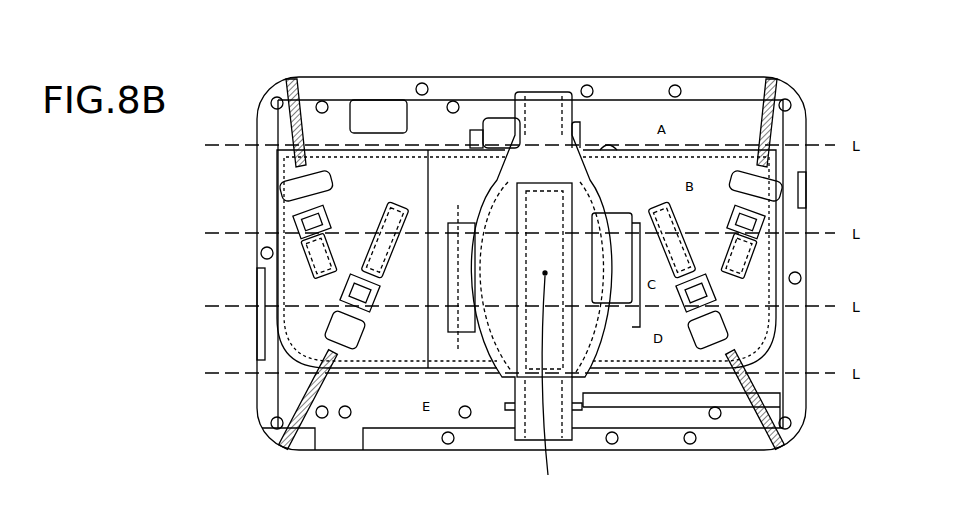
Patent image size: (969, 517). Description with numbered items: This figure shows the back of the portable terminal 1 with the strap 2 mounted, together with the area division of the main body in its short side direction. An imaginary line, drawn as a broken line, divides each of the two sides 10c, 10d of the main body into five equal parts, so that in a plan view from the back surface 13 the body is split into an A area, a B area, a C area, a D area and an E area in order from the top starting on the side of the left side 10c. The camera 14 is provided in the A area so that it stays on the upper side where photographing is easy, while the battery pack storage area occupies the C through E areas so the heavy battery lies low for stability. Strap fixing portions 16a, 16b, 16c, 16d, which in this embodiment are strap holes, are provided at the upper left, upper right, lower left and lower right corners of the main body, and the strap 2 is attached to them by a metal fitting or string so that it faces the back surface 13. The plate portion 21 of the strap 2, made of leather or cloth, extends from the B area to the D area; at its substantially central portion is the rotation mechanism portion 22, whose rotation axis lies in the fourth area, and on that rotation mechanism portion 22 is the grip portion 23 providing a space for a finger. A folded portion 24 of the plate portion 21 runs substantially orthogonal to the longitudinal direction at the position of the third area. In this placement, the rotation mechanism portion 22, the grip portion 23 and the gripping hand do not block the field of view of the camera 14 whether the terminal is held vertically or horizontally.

The portable terminal 1 is at (800, 98).
The strap 2 is at (688, 150).
The left side 10c is at (257, 191).
The side 10d is at (806, 334).
The back surface 13 is at (390, 402).
The camera 14 is at (384, 108).
The first fixing portion 16a is at (312, 85).
The second fixing portion 16b is at (758, 92).
The third fixing portion 16c is at (285, 440).
The fourth fixing portion 16d is at (780, 440).
The plate portion 21 is at (637, 175).
The rotation mechanism portion 22 is at (465, 330).
The grip portion 23 is at (545, 120).
The folded portion 24 is at (432, 180).